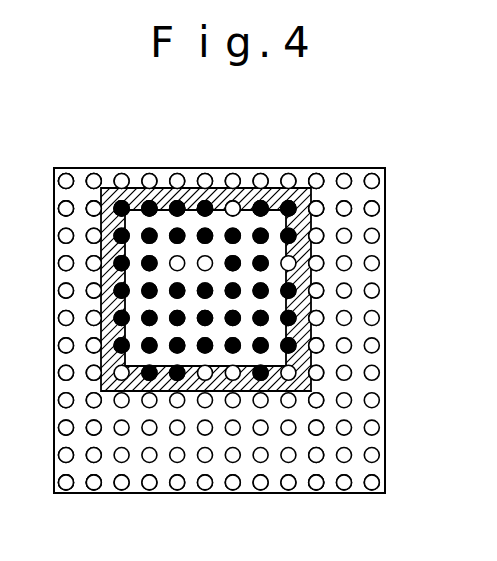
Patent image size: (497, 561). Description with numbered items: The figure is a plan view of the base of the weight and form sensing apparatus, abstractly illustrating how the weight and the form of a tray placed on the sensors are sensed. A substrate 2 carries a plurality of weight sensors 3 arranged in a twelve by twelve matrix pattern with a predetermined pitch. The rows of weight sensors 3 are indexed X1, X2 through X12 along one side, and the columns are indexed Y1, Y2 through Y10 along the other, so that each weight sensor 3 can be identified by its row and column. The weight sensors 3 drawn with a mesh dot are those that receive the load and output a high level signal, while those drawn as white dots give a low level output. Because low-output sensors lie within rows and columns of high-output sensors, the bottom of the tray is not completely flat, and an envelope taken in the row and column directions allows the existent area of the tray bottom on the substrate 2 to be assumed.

The substrate 2 is at (361, 168).
The weight sensors 3 is at (94, 173).
The first row of pads X1 is at (398, 179).
The second row of pads X2 is at (398, 207).
The twelfth row of pads X12 is at (398, 482).
The first column of pads Y1 is at (64, 509).
The second column of pads Y2 is at (92, 509).
The tenth column of pads Y10 is at (316, 509).